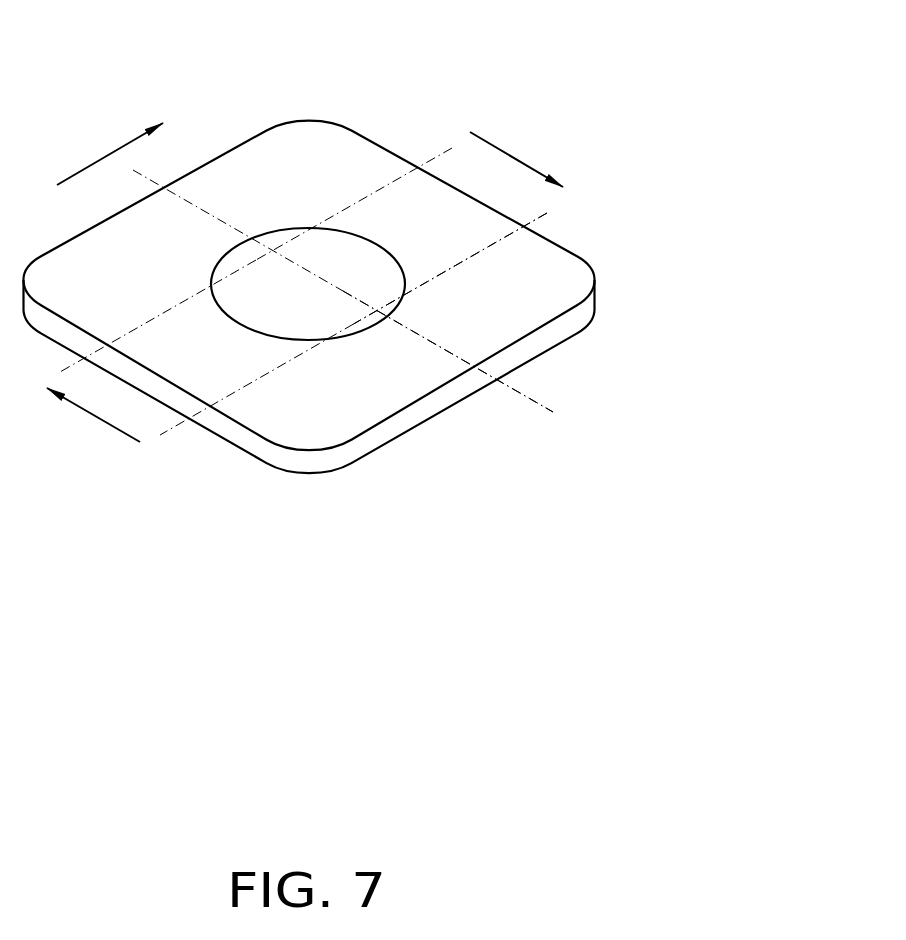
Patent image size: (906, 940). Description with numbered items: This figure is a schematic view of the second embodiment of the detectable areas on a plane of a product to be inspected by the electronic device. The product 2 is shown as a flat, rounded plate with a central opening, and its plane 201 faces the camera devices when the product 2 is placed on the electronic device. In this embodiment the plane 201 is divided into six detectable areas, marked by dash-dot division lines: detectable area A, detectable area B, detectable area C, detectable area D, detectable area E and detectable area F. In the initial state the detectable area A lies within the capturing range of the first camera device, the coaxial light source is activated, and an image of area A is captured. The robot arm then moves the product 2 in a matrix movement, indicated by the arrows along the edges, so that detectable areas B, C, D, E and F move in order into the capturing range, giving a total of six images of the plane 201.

The product 2 is at (309, 265).
The plane 201 is at (309, 299).
The detectable area A is at (444, 351).
The detectable area B is at (257, 379).
The detectable area C is at (158, 311).
The detectable area D is at (292, 219).
The detectable area E is at (451, 268).
The detectable area F is at (448, 312).